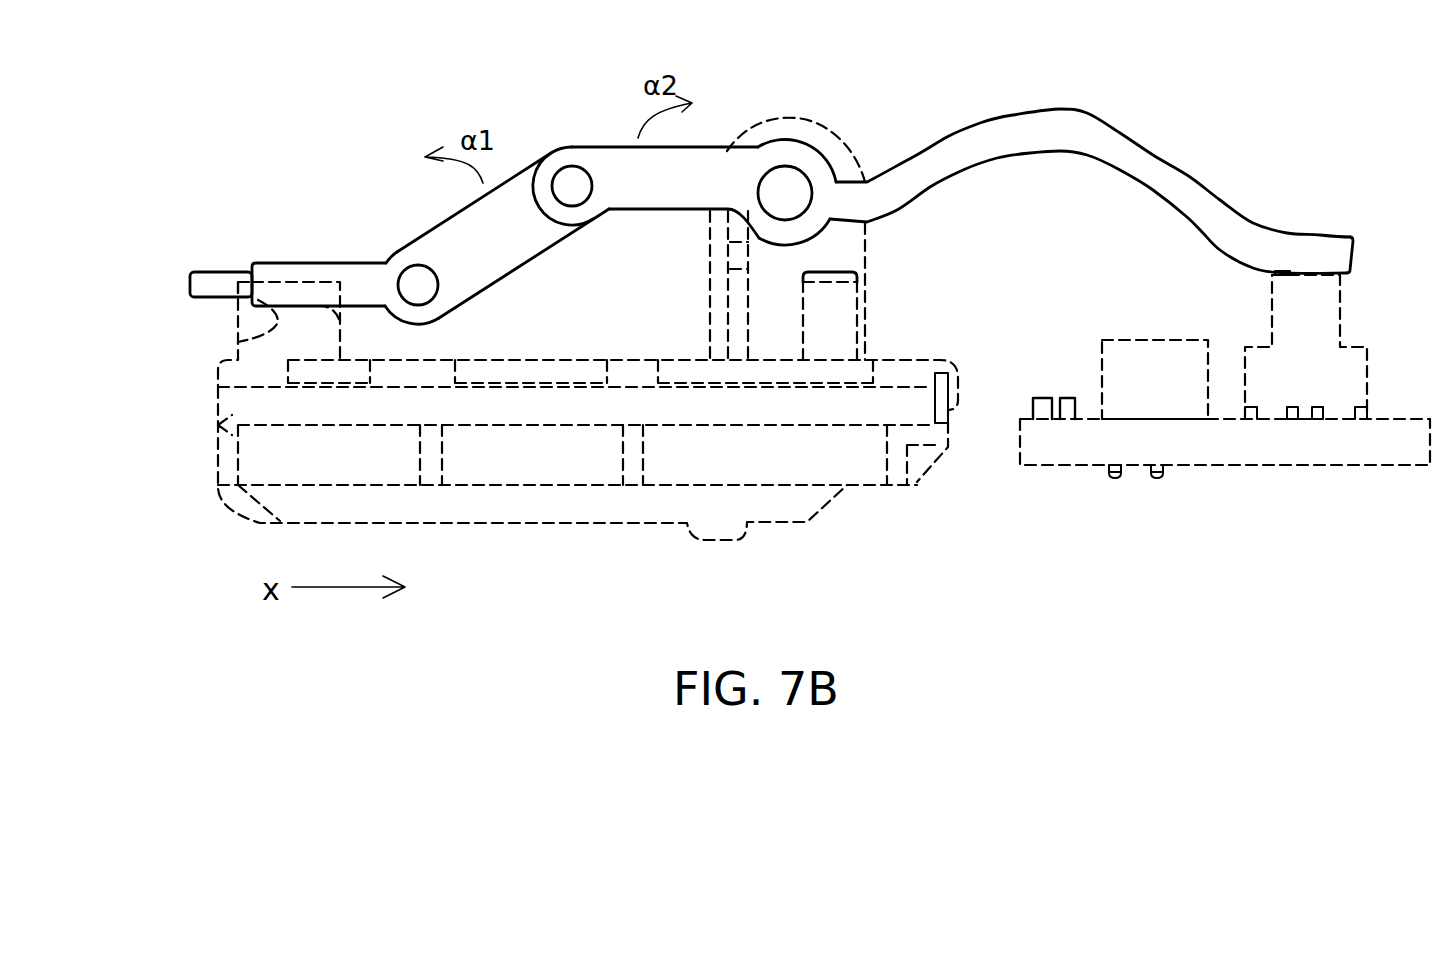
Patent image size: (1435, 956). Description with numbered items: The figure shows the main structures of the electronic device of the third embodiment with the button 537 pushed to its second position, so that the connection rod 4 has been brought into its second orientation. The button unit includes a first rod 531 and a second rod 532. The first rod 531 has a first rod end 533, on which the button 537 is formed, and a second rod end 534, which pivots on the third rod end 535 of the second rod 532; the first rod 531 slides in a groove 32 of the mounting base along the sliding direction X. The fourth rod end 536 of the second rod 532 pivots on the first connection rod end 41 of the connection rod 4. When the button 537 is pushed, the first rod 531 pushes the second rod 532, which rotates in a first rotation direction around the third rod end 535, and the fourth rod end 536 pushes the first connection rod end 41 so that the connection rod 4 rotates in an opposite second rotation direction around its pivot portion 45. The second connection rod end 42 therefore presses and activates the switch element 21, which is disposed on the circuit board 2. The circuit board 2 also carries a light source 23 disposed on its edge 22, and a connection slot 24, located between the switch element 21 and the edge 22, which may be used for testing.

The circuit board 2 is at (1377, 447).
The switch element 21 is at (1315, 310).
The edge of the circuit board 22 is at (1020, 443).
The light source 23 is at (1058, 410).
The connection slot 24 is at (1150, 373).
The groove 32 is at (238, 342).
The connection rod 4 is at (927, 110).
The first connection rod end 41 is at (603, 163).
The second connection rod end 42 is at (1313, 250).
The pivot portion 45 is at (785, 193).
The first rod 531 is at (290, 293).
The second rod 532 is at (508, 262).
The first rod end 533 is at (216, 282).
The second rod end 534 is at (352, 272).
The third rod end 535 is at (427, 243).
The fourth rod end 536 is at (523, 200).
The button 537 is at (190, 285).